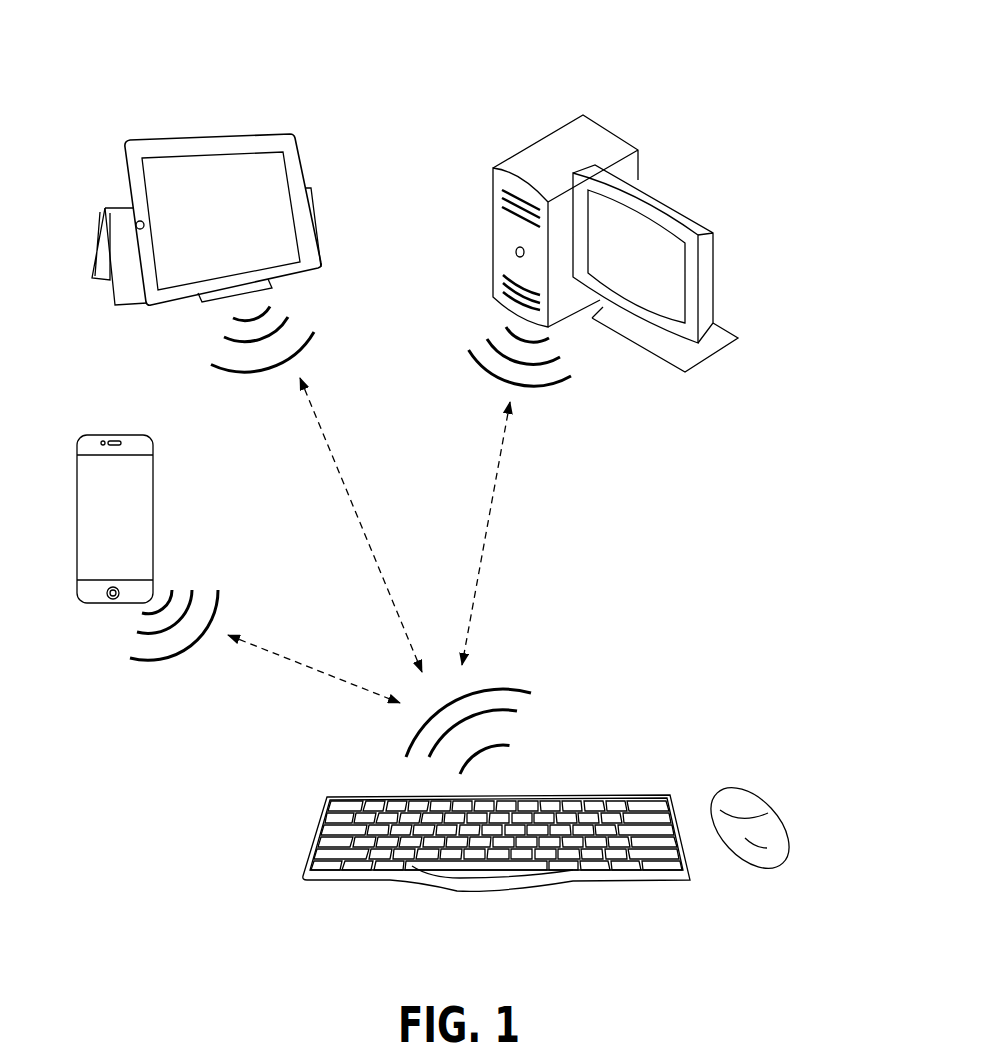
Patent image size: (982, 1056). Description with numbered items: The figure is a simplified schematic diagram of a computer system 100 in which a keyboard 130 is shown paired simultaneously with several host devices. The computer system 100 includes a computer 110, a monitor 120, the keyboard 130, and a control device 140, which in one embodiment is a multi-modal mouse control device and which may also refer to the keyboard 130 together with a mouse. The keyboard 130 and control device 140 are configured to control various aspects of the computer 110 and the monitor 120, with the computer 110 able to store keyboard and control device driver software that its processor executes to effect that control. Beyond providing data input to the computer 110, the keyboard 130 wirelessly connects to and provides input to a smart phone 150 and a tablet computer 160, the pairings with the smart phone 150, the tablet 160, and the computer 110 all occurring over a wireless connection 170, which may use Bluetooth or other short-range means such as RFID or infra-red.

The computer system 100 is at (432, 52).
The computer 110 is at (493, 203).
The monitor 120 is at (715, 253).
The keyboard 130 is at (322, 815).
The control device 140 is at (767, 808).
The smart phone 150 is at (152, 480).
The tablet computer 160 is at (187, 140).
The wireless connection 170 is at (369, 540).